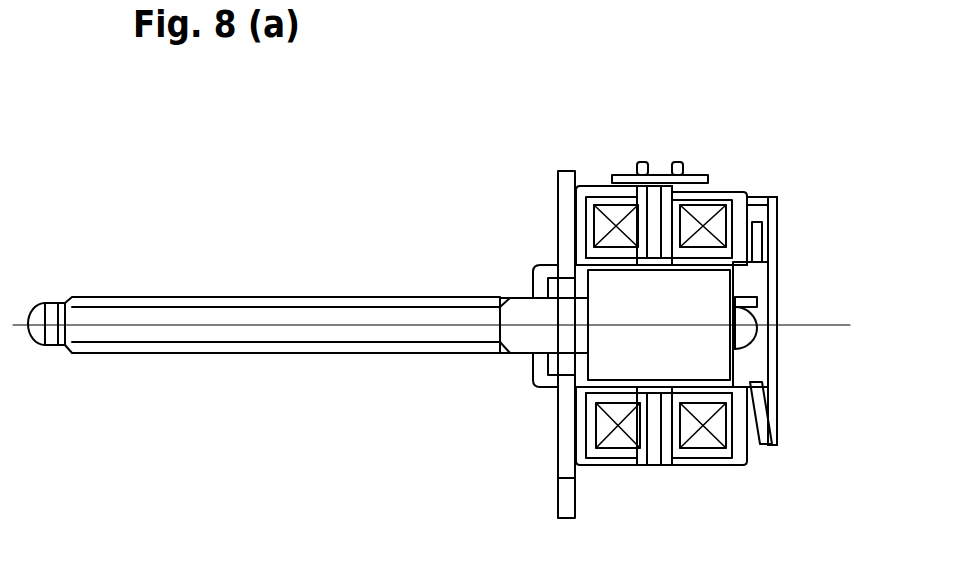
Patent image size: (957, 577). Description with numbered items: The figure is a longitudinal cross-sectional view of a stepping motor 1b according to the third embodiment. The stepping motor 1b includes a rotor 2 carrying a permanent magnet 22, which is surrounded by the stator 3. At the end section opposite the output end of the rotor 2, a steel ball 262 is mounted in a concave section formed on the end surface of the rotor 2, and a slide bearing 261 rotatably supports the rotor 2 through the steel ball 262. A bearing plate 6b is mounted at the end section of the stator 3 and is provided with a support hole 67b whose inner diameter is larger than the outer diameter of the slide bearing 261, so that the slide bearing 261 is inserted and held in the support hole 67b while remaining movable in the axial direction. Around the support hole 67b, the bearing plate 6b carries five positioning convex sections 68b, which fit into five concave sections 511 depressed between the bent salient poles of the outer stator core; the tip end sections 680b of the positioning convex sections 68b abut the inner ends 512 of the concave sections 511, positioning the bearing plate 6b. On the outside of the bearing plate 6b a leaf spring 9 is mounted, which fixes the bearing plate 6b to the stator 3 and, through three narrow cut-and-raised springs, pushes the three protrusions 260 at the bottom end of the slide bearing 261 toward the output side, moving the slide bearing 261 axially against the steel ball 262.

The stepping motor 1b is at (578, 108).
The rotor 2 is at (379, 305).
The permanent magnet 22 is at (623, 292).
The stator 3 is at (680, 143).
The slide bearing 261 is at (734, 300).
The steel ball 262 is at (734, 338).
The bearing plate 6b is at (775, 200).
The leaf spring 9 is at (778, 237).
The concave sections 511 is at (828, 250).
The inner ends 512 is at (828, 250).
The positioning convex sections 68b is at (828, 250).
The tip end sections 680b is at (770, 275).
The support hole 67b is at (770, 288).
The protrusions 260 is at (773, 427).